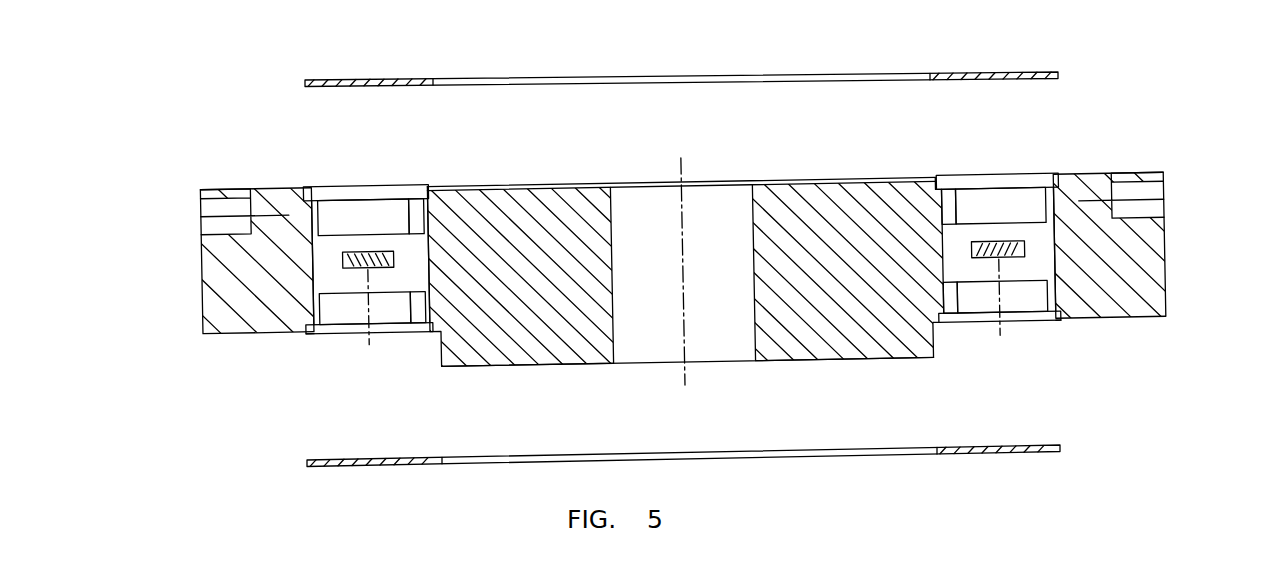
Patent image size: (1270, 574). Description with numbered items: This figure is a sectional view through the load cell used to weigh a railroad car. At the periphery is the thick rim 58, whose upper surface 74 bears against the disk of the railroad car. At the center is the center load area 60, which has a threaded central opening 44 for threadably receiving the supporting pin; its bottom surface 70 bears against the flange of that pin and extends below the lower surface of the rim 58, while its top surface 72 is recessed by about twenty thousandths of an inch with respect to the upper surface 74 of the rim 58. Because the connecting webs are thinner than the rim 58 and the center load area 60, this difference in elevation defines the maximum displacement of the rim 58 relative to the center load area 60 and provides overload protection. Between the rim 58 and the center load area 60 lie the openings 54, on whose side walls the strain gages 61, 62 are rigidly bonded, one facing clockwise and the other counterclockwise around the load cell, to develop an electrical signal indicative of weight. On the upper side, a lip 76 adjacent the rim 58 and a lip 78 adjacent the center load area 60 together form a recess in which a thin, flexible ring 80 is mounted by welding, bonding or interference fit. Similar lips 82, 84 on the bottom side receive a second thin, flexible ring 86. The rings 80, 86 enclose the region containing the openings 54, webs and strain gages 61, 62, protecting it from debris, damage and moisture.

The threaded central opening 44 is at (612, 207).
The openings 54 is at (314, 262).
The rim 58 is at (233, 333).
The center load area 60 is at (518, 183).
The strain gage 61 is at (993, 240).
The strain gage 62 is at (382, 250).
The bottom surface 70 is at (887, 357).
The top surface 72 is at (798, 183).
The upper surface 74 is at (222, 190).
The lip 76 is at (311, 199).
The lip 78 is at (432, 186).
The flexible ring 80 is at (335, 83).
The lip 82 is at (307, 330).
The lip 84 is at (428, 332).
The flexible ring 86 is at (958, 452).